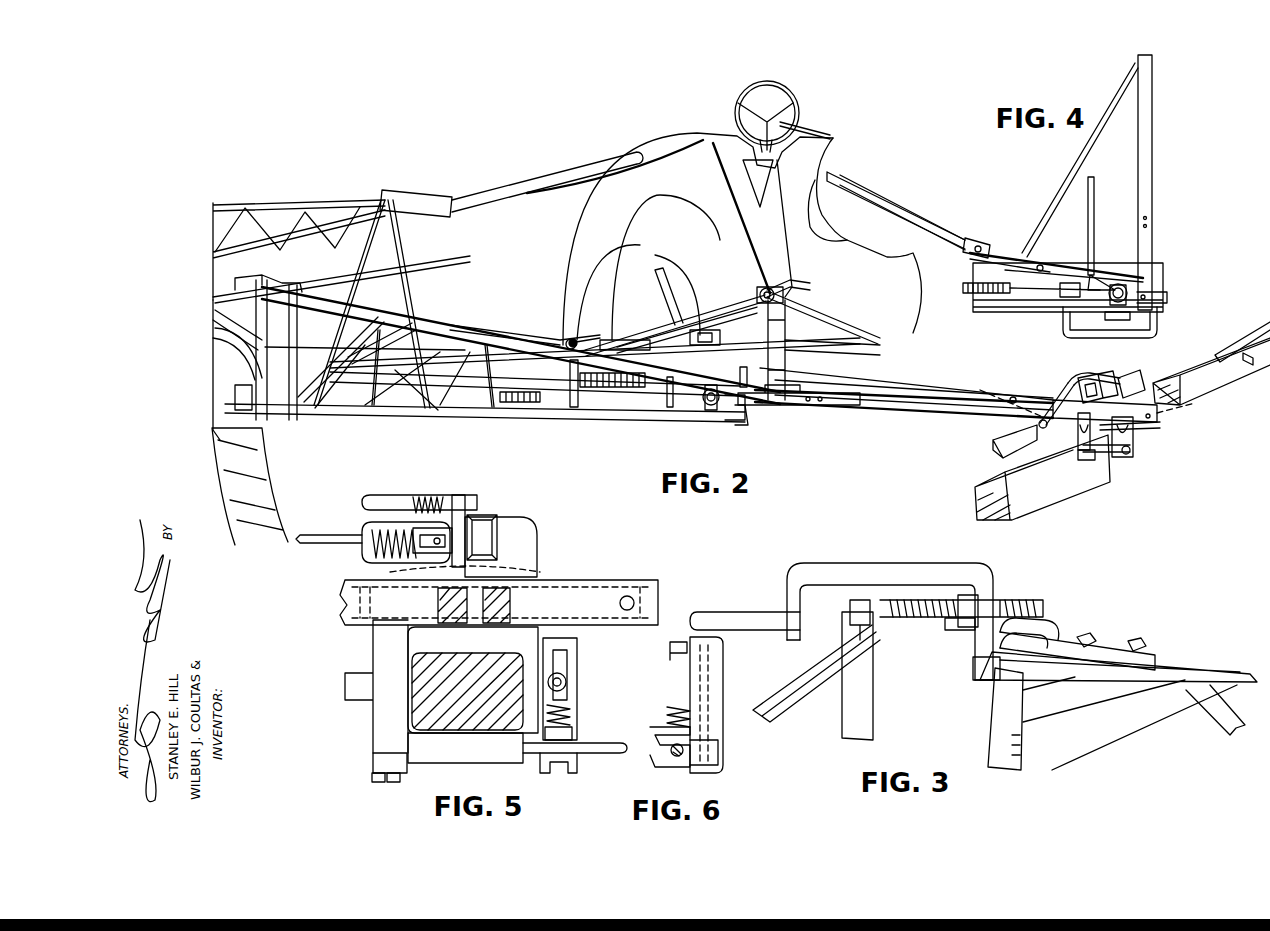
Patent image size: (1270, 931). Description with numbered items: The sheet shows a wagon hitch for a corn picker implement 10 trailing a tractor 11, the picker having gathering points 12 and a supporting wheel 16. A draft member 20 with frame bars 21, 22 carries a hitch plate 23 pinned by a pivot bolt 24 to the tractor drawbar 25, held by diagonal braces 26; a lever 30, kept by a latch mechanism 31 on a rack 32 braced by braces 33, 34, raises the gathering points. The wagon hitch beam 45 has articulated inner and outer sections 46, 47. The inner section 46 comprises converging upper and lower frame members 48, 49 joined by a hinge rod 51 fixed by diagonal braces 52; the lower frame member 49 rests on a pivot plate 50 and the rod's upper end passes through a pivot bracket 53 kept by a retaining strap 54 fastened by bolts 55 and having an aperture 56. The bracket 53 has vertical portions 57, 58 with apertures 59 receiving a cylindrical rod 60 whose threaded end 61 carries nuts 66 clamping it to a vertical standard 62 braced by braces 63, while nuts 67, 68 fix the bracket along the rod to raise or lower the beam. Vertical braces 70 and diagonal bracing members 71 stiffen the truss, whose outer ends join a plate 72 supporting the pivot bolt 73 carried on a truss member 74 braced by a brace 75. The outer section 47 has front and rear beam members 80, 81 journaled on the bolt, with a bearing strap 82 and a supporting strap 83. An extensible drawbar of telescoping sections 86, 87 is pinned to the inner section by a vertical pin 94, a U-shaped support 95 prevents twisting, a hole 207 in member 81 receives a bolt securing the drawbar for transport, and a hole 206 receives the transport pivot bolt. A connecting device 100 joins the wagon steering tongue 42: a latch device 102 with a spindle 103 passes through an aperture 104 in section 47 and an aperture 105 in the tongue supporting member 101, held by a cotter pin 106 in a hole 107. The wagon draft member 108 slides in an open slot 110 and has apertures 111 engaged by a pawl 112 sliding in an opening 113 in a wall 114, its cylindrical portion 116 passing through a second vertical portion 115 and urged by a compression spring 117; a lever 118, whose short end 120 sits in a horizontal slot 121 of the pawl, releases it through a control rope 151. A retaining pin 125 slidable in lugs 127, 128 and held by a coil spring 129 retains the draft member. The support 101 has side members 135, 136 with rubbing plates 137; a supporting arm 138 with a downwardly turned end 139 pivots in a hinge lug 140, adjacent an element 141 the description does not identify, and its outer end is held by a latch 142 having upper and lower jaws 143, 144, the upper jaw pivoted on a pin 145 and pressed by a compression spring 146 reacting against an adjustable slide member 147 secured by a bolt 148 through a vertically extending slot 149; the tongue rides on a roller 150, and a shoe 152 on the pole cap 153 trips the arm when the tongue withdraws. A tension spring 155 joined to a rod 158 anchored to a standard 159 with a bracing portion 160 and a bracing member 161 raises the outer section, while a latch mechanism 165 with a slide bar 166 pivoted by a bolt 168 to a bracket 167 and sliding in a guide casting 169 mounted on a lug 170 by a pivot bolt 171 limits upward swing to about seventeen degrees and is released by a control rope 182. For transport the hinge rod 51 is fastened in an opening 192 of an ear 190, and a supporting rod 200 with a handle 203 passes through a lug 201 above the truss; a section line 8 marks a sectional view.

In FIG. 5, the section line 8 is at (330, 530).
In FIG. 2, the implement 10 is at (238, 186).
In FIG. 2, the tractor 11 is at (822, 152).
In FIG. 2, the gathering points 12 is at (322, 298).
In FIG. 2, the supporting wheel 16 is at (258, 470).
In FIG. 2, the draft member 20 is at (465, 335).
In FIG. 2, the frame bar 21 is at (498, 365).
In FIG. 2, the frame bar 22 is at (480, 350).
In FIG. 2, the hitch plate 23 is at (626, 335).
In FIG. 2, the pivot bolt 24 is at (602, 335).
In FIG. 2, the drawbar 25 is at (650, 290).
In FIG. 2, the diagonal braces 26 is at (645, 300).
In FIG. 2, the lever 30 is at (530, 180).
In FIG. 2, the latch mechanism 31 is at (412, 213).
In FIG. 2, the rack 32 is at (405, 247).
In FIG. 2, the brace 33 is at (362, 272).
In FIG. 2, the brace 34 is at (362, 286).
In FIG. 2, the steering tongue 42 is at (1028, 478).
In FIG. 5, the steering tongue 42 is at (450, 693).
In FIG. 2, the wagon hitch beam 45 is at (768, 444).
In FIG. 2, the inner section 46 is at (522, 412).
In FIG. 4, the inner section 46 is at (975, 325).
In FIG. 3, the inner section 46 is at (1192, 633).
In FIG. 2, the outer section 47 is at (936, 432).
In FIG. 4, the outer section 47 is at (1165, 182).
In FIG. 2, the upper frame member 48 is at (430, 333).
In FIG. 3, the upper frame member 48 is at (1210, 663).
In FIG. 2, the lower frame member 49 is at (412, 412).
In FIG. 2, the pivot plate 50 is at (272, 420).
In FIG. 2, the hinge rod 51 is at (292, 352).
In FIG. 3, the hinge rod 51 is at (1000, 710).
In FIG. 2, the diagonal braces 52 is at (305, 380).
In FIG. 3, the diagonal braces 52 is at (1134, 723).
In FIG. 2, the pivot bracket 53 is at (258, 280).
In FIG. 3, the pivot bracket 53 is at (975, 568).
In FIG. 2, the retaining strap 54 is at (306, 292).
In FIG. 3, the retaining strap 54 is at (1070, 628).
In FIG. 3, the bolts 55 is at (1128, 640).
In FIG. 3, the aperture 56 is at (1045, 615).
In FIG. 3, the vertical portion 57 is at (975, 655).
In FIG. 3, the vertical portion 58 is at (800, 648).
In FIG. 3, the apertures 59 is at (790, 630).
In FIG. 3, the cylindrical rod 60 is at (748, 612).
In FIG. 3, the threaded end 61 is at (1022, 605).
In FIG. 2, the vertical standard 62 is at (262, 338).
In FIG. 3, the vertical standard 62 is at (870, 710).
In FIG. 2, the braces 63 is at (240, 318).
In FIG. 3, the braces 63 is at (805, 705).
In FIG. 3, the nuts 66 is at (878, 600).
In FIG. 3, the nut 67 is at (958, 630).
In FIG. 3, the nut 68 is at (995, 600).
In FIG. 2, the vertical braces 70 is at (445, 413).
In FIG. 2, the diagonal bracing members 71 is at (378, 405).
In FIG. 2, the vertically disposed plate 72 is at (728, 410).
In FIG. 2, the pivot bolt 73 is at (740, 420).
In FIG. 4, the pivot bolt 73 is at (1168, 292).
In FIG. 2, the truss member 74 is at (598, 395).
In FIG. 2, the brace 75 is at (615, 400).
In FIG. 2, the front beam member 80 is at (975, 395).
In FIG. 2, the rear beam member 81 is at (893, 415).
In FIG. 5, the rear beam member 81 is at (613, 590).
In FIG. 2, the bearing strap 82 is at (780, 405).
In FIG. 4, the bearing strap 82 is at (1150, 255).
In FIG. 2, the supporting strap 83 is at (775, 335).
In FIG. 4, the front telescoping tubular section 86 is at (1075, 345).
In FIG. 2, the rear telescoping tubular section 87 is at (690, 410).
In FIG. 4, the rear telescoping tubular section 87 is at (1105, 333).
In FIG. 2, the vertical pin 94 is at (700, 420).
In FIG. 4, the vertical pin 94 is at (1115, 283).
In FIG. 2, the U-shaped support 95 is at (675, 398).
In FIG. 4, the U-shaped support 95 is at (1155, 330).
In FIG. 2, the connecting device 100 is at (1230, 425).
In FIG. 5, the connecting device 100 is at (592, 552).
In FIG. 2, the tongue supporting member 101 is at (1188, 497).
In FIG. 5, the tongue supporting member 101 is at (338, 667).
In FIG. 2, the latch device 102 is at (1150, 385).
In FIG. 5, the latch device 102 is at (522, 540).
In FIG. 5, the spindle 103 is at (476, 632).
In FIG. 5, the aperture 104 is at (530, 574).
In FIG. 5, the aperture 105 is at (455, 622).
In FIG. 5, the cotter pin 106 is at (500, 623).
In FIG. 5, the hole 107 is at (512, 606).
In FIG. 2, the draft member 108 is at (1012, 443).
In FIG. 5, the draft member 108 is at (495, 530).
In FIG. 5, the open slot 110 is at (515, 538).
In FIG. 5, the apertures 111 is at (477, 525).
In FIG. 5, the pawl 112 is at (512, 548).
In FIG. 5, the opening 113 is at (458, 510).
In FIG. 5, the wall 114 is at (430, 577).
In FIG. 5, the second vertical portion 115 is at (370, 555).
In FIG. 5, the cylindrical portion 116 is at (378, 540).
In FIG. 5, the compression spring 117 is at (380, 525).
In FIG. 2, the lever 118 is at (1068, 385).
In FIG. 5, the lever 118 is at (310, 537).
In FIG. 5, the short end 120 is at (400, 560).
In FIG. 5, the horizontal slot 121 is at (415, 560).
In FIG. 2, the retaining pin 125 is at (1115, 385).
In FIG. 5, the retaining pin 125 is at (370, 500).
In FIG. 5, the lug 127 is at (400, 505).
In FIG. 5, the lug 128 is at (455, 495).
In FIG. 5, the coil spring 129 is at (425, 497).
In FIG. 2, the side member 135 is at (1070, 477).
In FIG. 5, the side member 135 is at (380, 690).
In FIG. 2, the side member 136 is at (1140, 445).
In FIG. 5, the side member 136 is at (580, 665).
In FIG. 2, the rubbing plate 137 is at (1150, 424).
In FIG. 5, the rubbing plate 137 is at (540, 700).
In FIG. 2, the supporting arm 138 is at (1135, 460).
In FIG. 5, the supporting arm 138 is at (530, 752).
In FIG. 6, the supporting arm 138 is at (690, 765).
In FIG. 2, the downwardly turned end 139 is at (1080, 470).
In FIG. 5, the downwardly turned end 139 is at (392, 783).
In FIG. 2, the hinge lug 140 is at (1090, 470).
In FIG. 5, the hinge lug 140 is at (375, 765).
In FIG. 5, the bolt 141 is at (372, 783).
In FIG. 2, the latch 142 is at (1140, 463).
In FIG. 5, the latch 142 is at (663, 715).
In FIG. 2, the upper jaw 143 is at (1122, 470).
In FIG. 5, the upper jaw 143 is at (572, 735).
In FIG. 5, the lower jaw 144 is at (568, 772).
In FIG. 6, the pin 145 is at (722, 742).
In FIG. 5, the compression spring 146 is at (570, 720).
In FIG. 6, the adjustable slide member 147 is at (676, 648).
In FIG. 5, the bolt 148 is at (575, 688).
In FIG. 5, the vertically extending slot 149 is at (566, 662).
In FIG. 5, the roller 150 is at (463, 753).
In FIG. 2, the control rope 151 is at (750, 243).
In FIG. 2, the shoe 152 is at (1248, 337).
In FIG. 2, the pole cap 153 is at (1245, 330).
In FIG. 2, the spring 155 is at (640, 395).
In FIG. 4, the spring 155 is at (962, 283).
In FIG. 2, the rod 158 is at (685, 345).
In FIG. 4, the rod 158 is at (1015, 310).
In FIG. 2, the standard 159 is at (798, 350).
In FIG. 4, the standard 159 is at (1085, 262).
In FIG. 2, the bracing portion 160 is at (862, 340).
In FIG. 4, the bracing portion 160 is at (1070, 195).
In FIG. 2, the bracing member 161 is at (852, 380).
In FIG. 4, the bracing member 161 is at (1092, 210).
In FIG. 2, the latch mechanism 165 is at (558, 322).
In FIG. 2, the slide bar 166 is at (735, 305).
In FIG. 4, the slide bar 166 is at (935, 225).
In FIG. 2, the bracket 167 is at (775, 292).
In FIG. 2, the pivot bolt 168 is at (760, 290).
In FIG. 4, the pivot bolt 168 is at (1022, 258).
In FIG. 2, the guide casting 169 is at (595, 345).
In FIG. 2, the lug 170 is at (572, 300).
In FIG. 2, the pivot bolt 171 is at (575, 310).
In FIG. 4, the pivot bolt 171 is at (985, 248).
In FIG. 2, the control rope 182 is at (680, 160).
In FIG. 2, the ear 190 is at (235, 400).
In FIG. 2, the opening 192 is at (245, 380).
In FIG. 2, the supporting rod 200 is at (240, 345).
In FIG. 2, the lug 201 is at (352, 358).
In FIG. 2, the handle 203 is at (365, 340).
In FIG. 2, the hole 206 is at (1165, 412).
In FIG. 5, the hole 206 is at (640, 603).
In FIG. 2, the hole 207 is at (1012, 398).